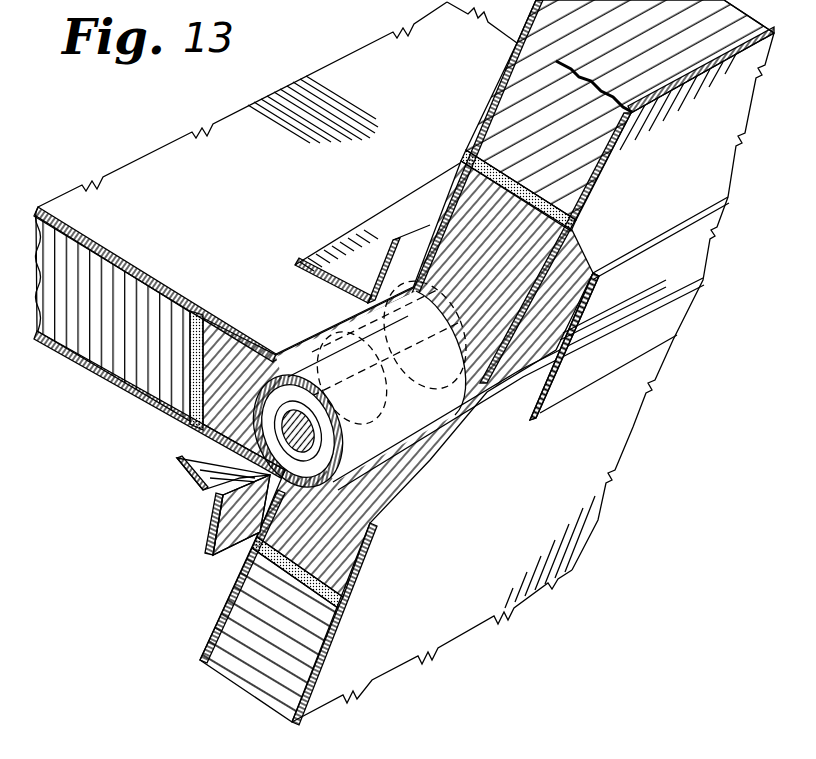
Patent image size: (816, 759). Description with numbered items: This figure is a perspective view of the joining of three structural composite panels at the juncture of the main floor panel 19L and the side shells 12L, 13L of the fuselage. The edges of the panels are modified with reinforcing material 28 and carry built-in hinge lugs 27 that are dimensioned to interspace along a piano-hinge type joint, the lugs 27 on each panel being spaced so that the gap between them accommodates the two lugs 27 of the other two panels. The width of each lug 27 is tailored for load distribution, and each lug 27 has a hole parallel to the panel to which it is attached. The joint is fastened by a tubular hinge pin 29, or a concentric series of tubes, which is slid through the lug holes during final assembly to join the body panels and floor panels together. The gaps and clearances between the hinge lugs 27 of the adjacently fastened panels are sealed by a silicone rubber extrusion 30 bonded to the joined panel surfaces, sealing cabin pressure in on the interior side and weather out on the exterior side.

The main floor panel 19L is at (268, 198).
The side shell 12L is at (696, 182).
The side shell 13L is at (495, 552).
The hinge lug 27 is at (268, 410).
The reinforcing material 28 is at (223, 370).
The tubular hinge pin 29 is at (207, 478).
The silicone rubber extrusion 30 is at (373, 228).